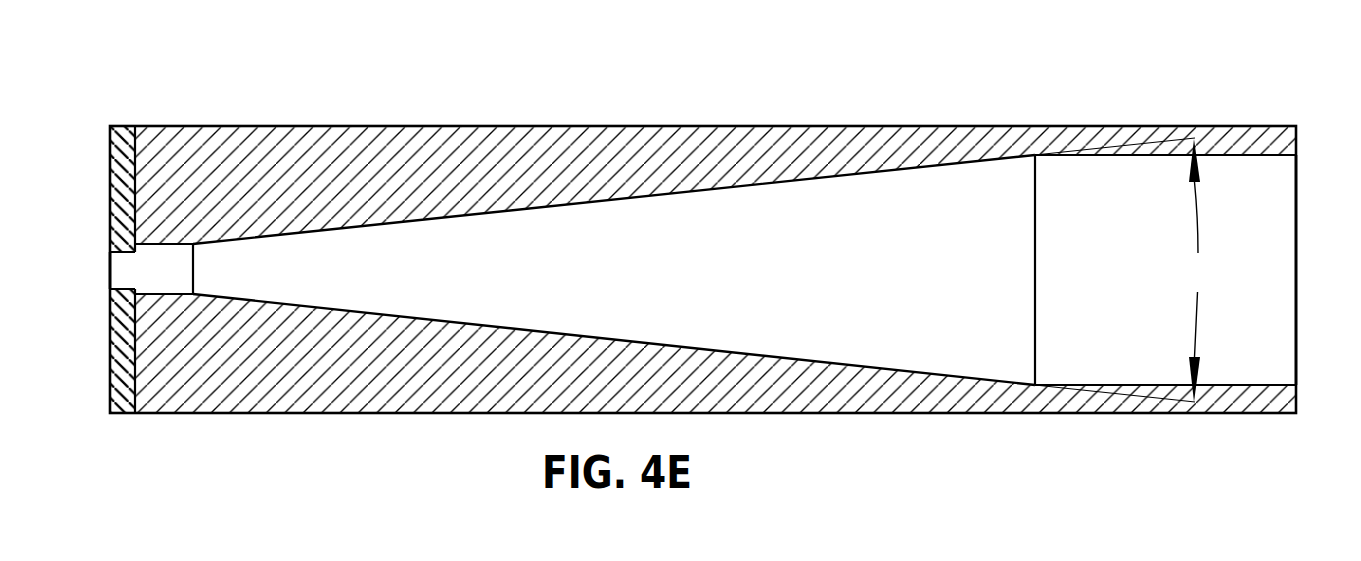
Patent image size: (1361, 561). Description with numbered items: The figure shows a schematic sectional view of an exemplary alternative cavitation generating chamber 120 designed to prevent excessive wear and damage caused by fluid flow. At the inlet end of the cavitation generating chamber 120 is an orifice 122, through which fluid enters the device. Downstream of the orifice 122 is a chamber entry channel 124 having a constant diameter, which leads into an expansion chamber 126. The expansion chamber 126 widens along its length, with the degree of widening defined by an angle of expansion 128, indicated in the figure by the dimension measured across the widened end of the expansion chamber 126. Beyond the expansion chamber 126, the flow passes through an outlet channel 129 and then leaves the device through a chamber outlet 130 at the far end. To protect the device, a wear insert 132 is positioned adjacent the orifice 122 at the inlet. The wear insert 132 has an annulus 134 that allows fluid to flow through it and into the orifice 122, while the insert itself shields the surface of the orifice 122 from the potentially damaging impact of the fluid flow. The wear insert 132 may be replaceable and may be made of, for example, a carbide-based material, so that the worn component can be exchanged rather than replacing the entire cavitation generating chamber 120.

The cavitation generating chamber 120 is at (409, 76).
The orifice 122 is at (120, 277).
The chamber entry channel 124 is at (162, 245).
The expansion chamber 126 is at (575, 334).
The angle of expansion 128 is at (1126, 270).
The outlet channel 129 is at (1240, 385).
The chamber outlet 130 is at (1297, 208).
The wear insert 132 is at (118, 213).
The annulus 134 is at (110, 261).